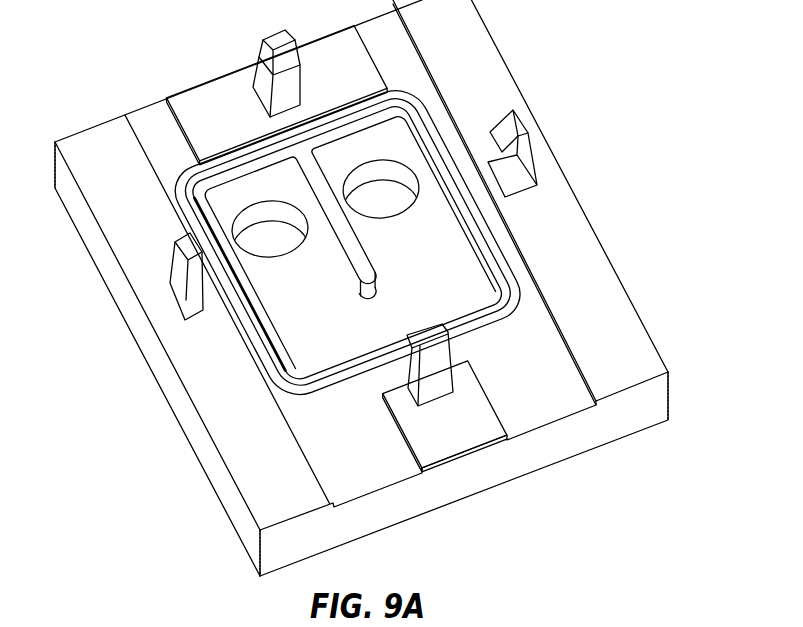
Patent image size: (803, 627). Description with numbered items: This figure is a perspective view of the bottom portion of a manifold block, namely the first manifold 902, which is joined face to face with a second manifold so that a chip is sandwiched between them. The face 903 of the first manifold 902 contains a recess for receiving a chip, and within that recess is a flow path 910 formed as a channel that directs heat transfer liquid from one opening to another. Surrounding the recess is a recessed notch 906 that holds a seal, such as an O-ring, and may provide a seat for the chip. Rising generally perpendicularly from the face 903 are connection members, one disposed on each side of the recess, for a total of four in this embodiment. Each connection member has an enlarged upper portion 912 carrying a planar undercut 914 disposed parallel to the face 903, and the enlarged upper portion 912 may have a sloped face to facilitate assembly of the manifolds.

The first manifold 902 is at (172, 382).
The face 903 is at (255, 453).
The recessed notch 906 is at (187, 173).
The flow path 910 is at (436, 278).
The enlarged upper portion 912 is at (180, 283).
The planar undercut 914 is at (283, 57).